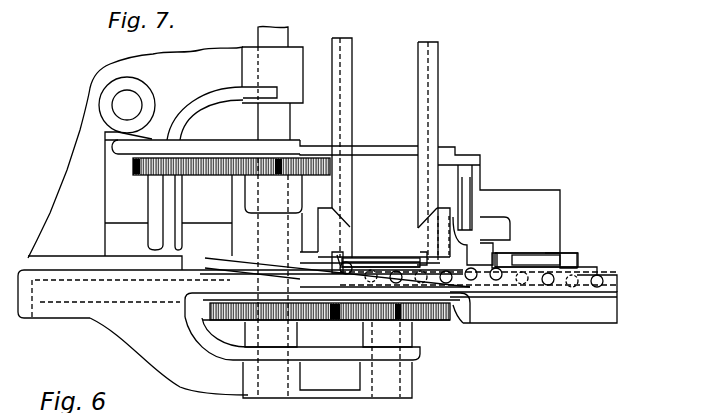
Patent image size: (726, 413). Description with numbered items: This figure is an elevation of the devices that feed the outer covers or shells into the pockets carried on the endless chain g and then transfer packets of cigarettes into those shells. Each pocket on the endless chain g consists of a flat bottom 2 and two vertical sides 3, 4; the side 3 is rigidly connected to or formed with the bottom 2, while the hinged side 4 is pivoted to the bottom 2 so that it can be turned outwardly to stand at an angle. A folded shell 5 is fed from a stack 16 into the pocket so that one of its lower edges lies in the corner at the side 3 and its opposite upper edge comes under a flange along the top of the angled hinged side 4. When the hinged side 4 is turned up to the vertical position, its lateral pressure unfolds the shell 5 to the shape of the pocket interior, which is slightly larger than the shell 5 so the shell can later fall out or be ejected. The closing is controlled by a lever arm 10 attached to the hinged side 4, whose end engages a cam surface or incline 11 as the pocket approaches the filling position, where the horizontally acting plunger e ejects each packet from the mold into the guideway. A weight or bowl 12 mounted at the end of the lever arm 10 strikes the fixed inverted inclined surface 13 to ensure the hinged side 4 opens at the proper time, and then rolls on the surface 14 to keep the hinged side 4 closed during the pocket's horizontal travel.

The flat bottom 2 is at (352, 260).
The vertical side 3 is at (417, 250).
The hinged side 4 is at (338, 255).
The outer cover or shell 5 is at (367, 260).
The lever arm 10 is at (505, 306).
The cam surface or incline 11 is at (385, 284).
The weight or bowl 12 is at (332, 288).
The fixed inverted inclined surface 13 is at (230, 270).
The surface 14 is at (582, 276).
The stack 16 is at (285, 149).
The horizontally acting plunger e is at (542, 253).
The endless chain g is at (520, 303).